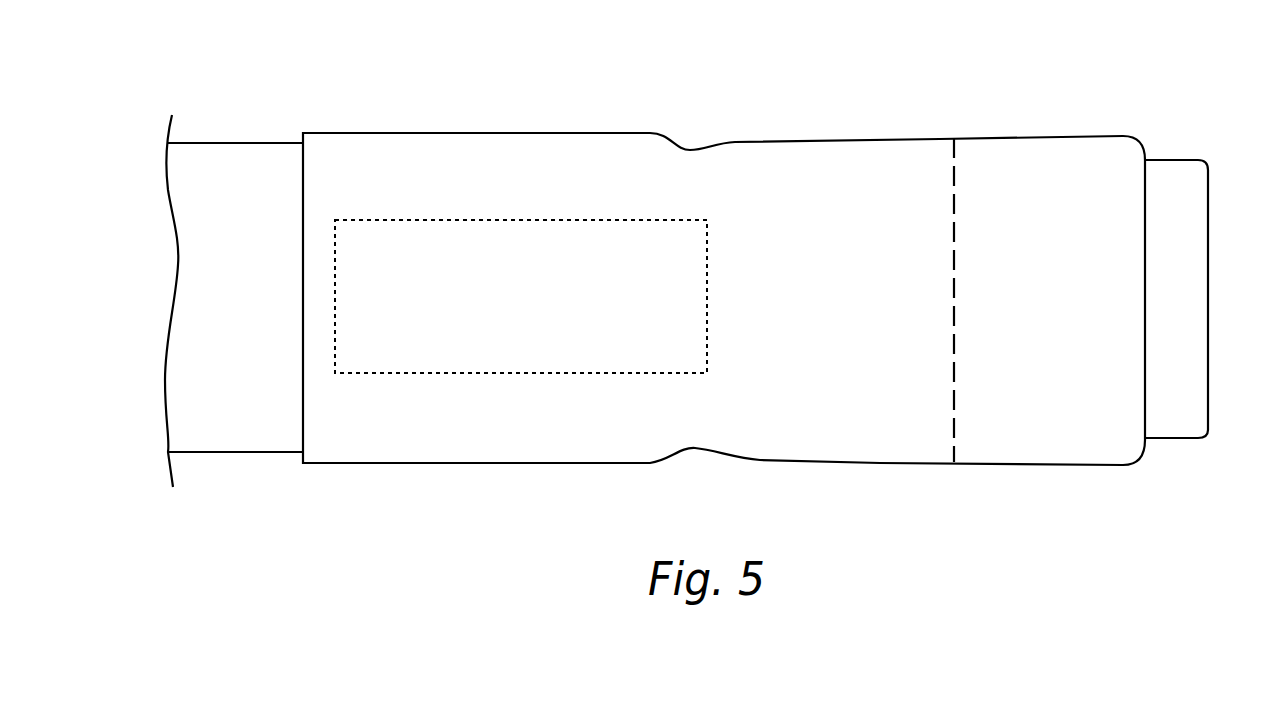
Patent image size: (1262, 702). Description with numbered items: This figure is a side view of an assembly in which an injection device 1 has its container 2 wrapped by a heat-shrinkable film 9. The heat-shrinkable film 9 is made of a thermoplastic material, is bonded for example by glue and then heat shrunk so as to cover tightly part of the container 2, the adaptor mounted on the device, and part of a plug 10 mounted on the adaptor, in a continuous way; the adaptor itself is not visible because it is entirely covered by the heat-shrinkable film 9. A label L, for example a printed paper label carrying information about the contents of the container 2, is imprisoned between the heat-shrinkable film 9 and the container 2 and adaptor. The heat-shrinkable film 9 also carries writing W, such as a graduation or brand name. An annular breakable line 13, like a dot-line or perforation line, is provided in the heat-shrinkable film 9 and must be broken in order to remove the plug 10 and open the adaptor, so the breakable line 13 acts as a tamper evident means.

The injection device 1 is at (226, 493).
The container 2 is at (285, 453).
The heat-shrinkable film 9 is at (850, 415).
The plug 10 is at (1177, 157).
The annular breakable line 13 is at (960, 399).
The label L is at (420, 280).
The writing W is at (790, 190).